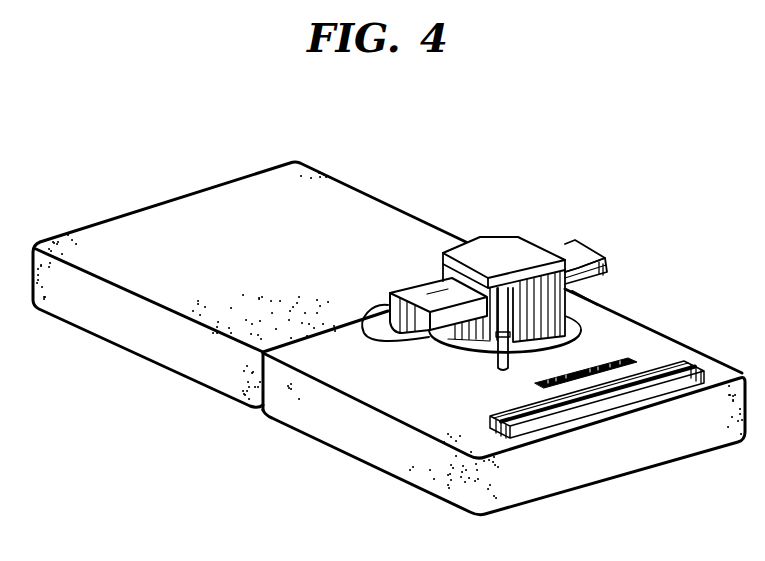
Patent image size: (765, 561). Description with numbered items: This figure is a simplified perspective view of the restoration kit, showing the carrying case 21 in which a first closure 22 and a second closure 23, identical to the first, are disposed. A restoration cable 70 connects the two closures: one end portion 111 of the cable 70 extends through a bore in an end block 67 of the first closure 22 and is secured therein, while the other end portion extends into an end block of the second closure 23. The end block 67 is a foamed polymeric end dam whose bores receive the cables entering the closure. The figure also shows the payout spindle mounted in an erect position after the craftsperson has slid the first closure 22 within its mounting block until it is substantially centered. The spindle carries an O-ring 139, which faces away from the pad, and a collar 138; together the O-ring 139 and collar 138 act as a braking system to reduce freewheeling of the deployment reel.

The carrying case 21 is at (652, 337).
The first closure 22 is at (585, 250).
The second closure 23 is at (615, 405).
The end block 67 is at (419, 298).
The restoration cable 70 is at (450, 344).
The end portion 111 is at (362, 340).
The collar 138 is at (499, 356).
The O-ring 139 is at (514, 282).